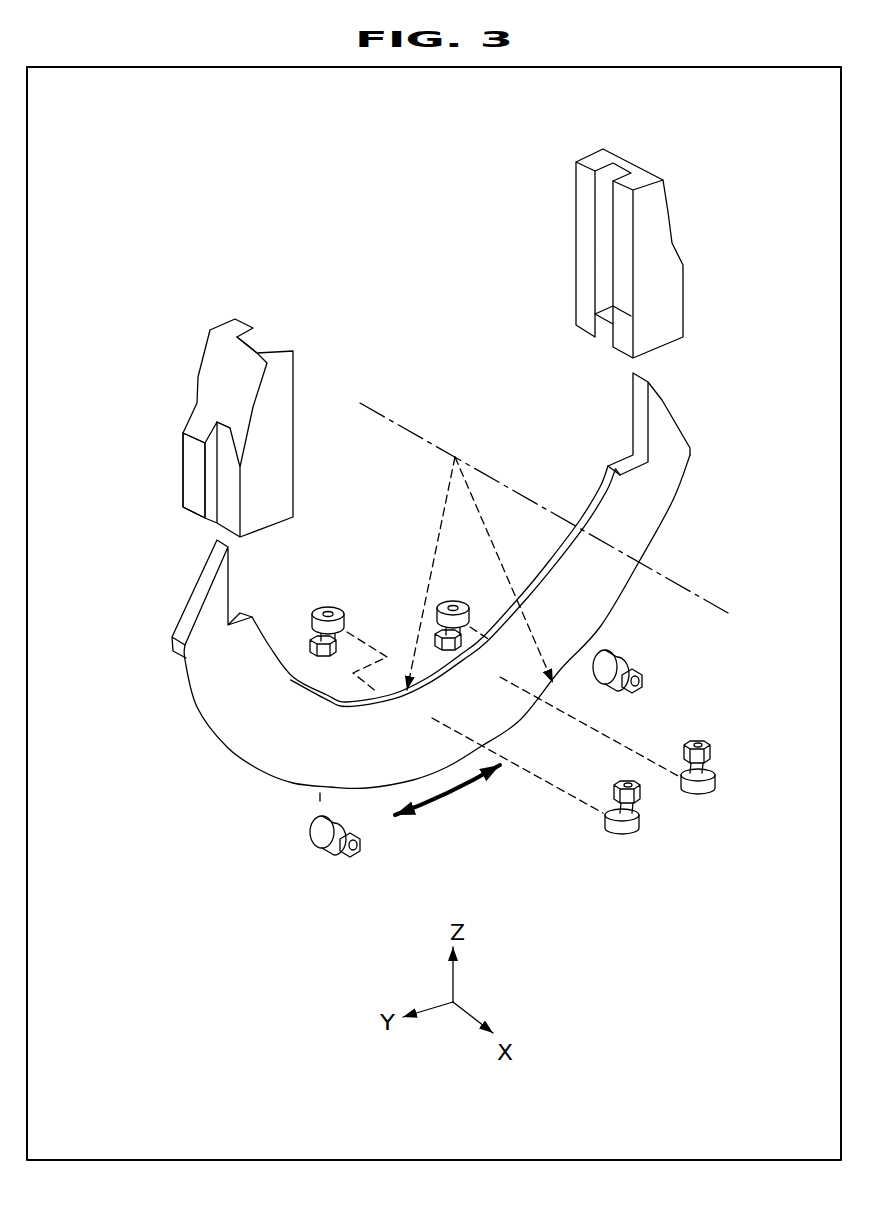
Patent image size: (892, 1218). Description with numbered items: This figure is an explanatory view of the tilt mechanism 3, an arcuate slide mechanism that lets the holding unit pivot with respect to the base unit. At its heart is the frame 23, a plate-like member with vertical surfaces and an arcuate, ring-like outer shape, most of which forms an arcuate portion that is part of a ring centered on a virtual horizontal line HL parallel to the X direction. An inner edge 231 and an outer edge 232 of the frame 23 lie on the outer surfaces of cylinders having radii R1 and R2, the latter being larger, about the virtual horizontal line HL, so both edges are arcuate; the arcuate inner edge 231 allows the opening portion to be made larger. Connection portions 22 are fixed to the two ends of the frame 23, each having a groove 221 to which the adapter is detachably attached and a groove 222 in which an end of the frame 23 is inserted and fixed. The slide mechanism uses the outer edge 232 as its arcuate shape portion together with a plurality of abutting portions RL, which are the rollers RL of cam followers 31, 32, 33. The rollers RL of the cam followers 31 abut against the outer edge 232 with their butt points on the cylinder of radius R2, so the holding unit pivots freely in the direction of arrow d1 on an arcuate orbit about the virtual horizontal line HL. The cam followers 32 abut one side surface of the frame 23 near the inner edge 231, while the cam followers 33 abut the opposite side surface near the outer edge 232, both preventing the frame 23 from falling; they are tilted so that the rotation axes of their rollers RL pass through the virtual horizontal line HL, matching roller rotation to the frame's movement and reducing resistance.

The tilt mechanism 3 is at (278, 887).
The connection portion 22 is at (205, 358).
The groove 221 is at (603, 257).
The groove 222 is at (207, 470).
The frame 23 is at (397, 580).
The inner edge 231 is at (530, 605).
The outer edge 232 is at (212, 728).
The cam follower 31 is at (645, 677).
The cam follower 32 is at (710, 750).
The cam follower 33 is at (308, 635).
The roller RL is at (315, 608).
The virtual horizontal line HL is at (685, 590).
The radius R1 is at (430, 540).
The radius R2 is at (480, 510).
The arrow d1 is at (463, 795).